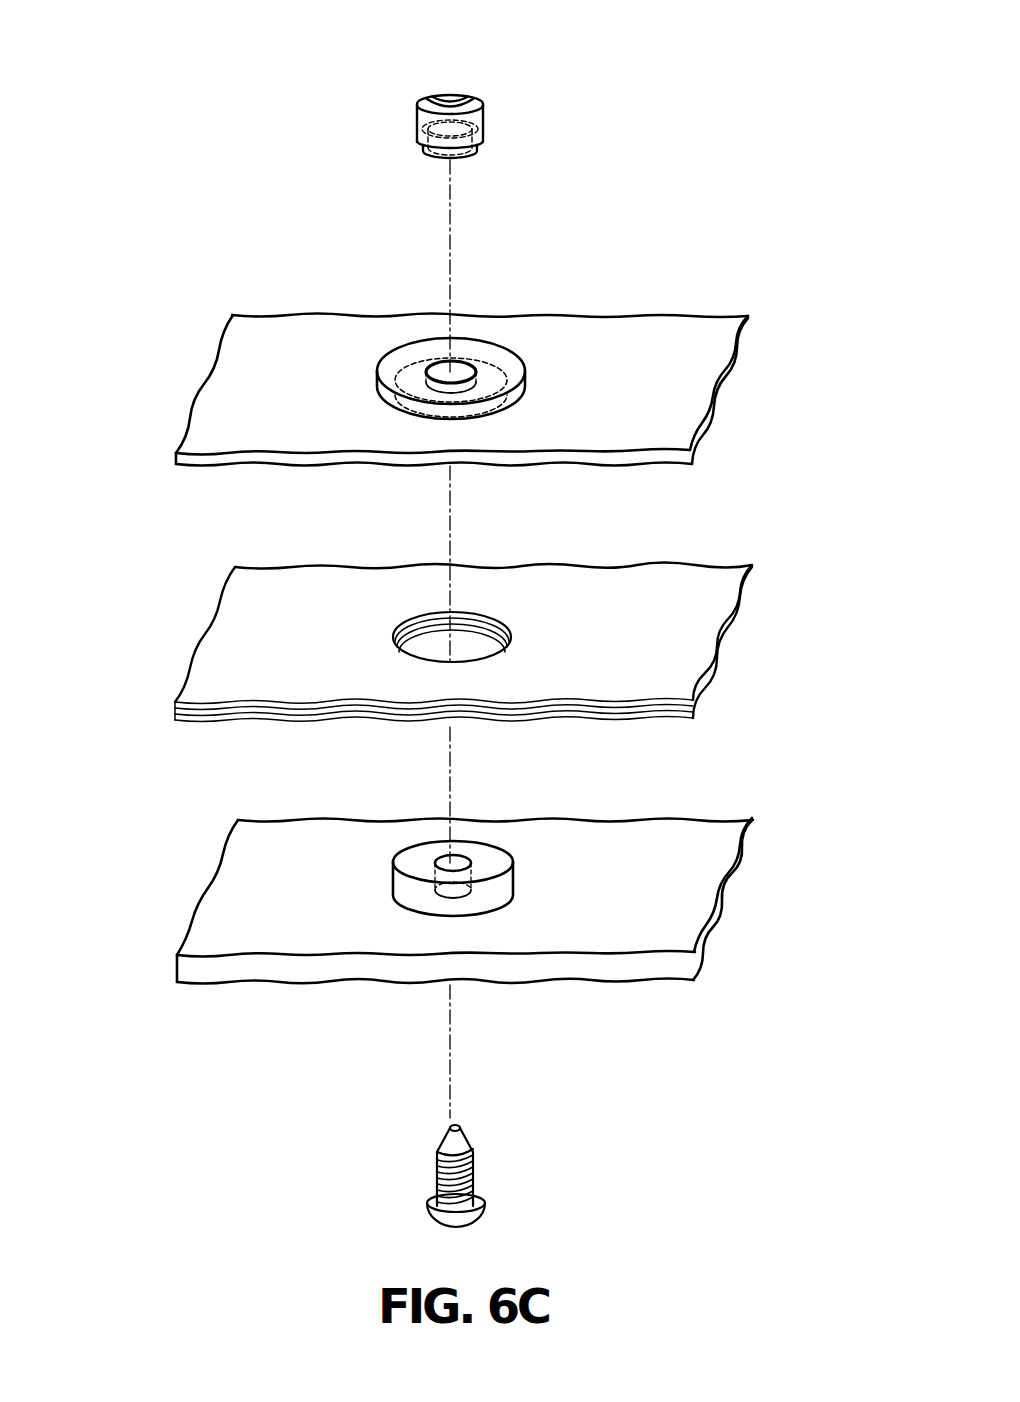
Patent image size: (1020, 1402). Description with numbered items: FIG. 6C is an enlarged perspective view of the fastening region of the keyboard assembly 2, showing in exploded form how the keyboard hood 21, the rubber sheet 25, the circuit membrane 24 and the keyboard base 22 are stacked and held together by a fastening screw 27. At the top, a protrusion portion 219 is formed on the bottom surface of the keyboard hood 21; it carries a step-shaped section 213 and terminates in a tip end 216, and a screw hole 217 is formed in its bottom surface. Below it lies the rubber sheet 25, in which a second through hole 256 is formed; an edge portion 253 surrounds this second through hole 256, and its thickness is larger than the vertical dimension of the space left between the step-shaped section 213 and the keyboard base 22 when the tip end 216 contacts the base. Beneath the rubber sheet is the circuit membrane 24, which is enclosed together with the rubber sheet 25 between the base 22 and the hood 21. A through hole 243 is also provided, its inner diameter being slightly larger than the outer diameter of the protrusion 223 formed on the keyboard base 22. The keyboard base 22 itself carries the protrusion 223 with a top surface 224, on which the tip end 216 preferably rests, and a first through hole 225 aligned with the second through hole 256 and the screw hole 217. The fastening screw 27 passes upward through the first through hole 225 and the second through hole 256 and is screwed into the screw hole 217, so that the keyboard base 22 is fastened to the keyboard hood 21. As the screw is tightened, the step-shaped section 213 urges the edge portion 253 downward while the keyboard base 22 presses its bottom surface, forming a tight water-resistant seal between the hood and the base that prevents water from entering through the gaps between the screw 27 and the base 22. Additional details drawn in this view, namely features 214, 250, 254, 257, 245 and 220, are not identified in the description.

The keyboard assembly 2 is at (101, 33).
The keyboard hood 21 is at (465, 111).
The protrusion portion 219 is at (417, 100).
The step-shaped section 213 is at (483, 115).
The tip end 216 is at (476, 143).
The flange 214 is at (478, 152).
The screw hole 217 is at (441, 165).
The rubber sheet 25 is at (467, 456).
The recess 257 is at (412, 362).
The second through hole 256 is at (465, 365).
The washer 254 is at (594, 357).
The through hole 243 is at (397, 416).
The plate body 250 is at (200, 460).
The edge portion 253 is at (521, 384).
The circuit membrane 24 is at (413, 625).
The board body 245 is at (226, 673).
The keyboard base 22 is at (455, 878).
The first through hole 225 is at (470, 858).
The top surface 224 is at (613, 844).
The protrusion 223 is at (513, 885).
The plate body 220 is at (228, 916).
The fastening screw 27 is at (497, 1210).